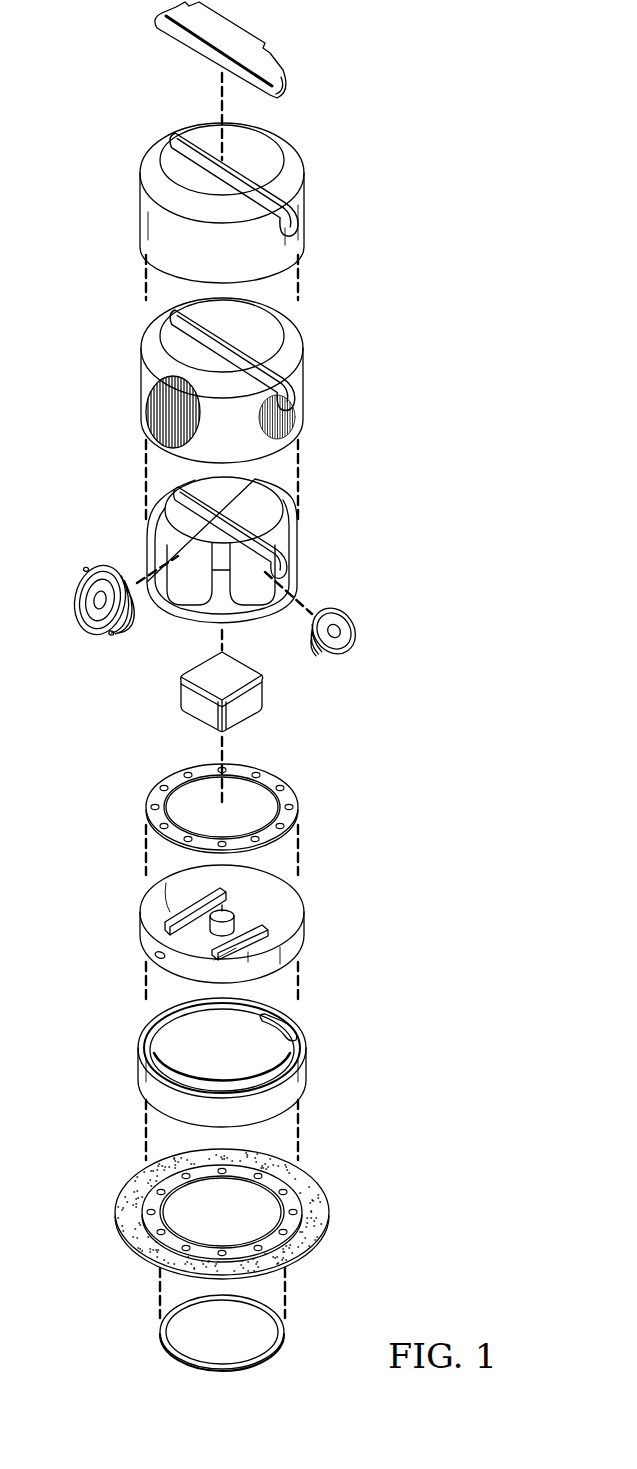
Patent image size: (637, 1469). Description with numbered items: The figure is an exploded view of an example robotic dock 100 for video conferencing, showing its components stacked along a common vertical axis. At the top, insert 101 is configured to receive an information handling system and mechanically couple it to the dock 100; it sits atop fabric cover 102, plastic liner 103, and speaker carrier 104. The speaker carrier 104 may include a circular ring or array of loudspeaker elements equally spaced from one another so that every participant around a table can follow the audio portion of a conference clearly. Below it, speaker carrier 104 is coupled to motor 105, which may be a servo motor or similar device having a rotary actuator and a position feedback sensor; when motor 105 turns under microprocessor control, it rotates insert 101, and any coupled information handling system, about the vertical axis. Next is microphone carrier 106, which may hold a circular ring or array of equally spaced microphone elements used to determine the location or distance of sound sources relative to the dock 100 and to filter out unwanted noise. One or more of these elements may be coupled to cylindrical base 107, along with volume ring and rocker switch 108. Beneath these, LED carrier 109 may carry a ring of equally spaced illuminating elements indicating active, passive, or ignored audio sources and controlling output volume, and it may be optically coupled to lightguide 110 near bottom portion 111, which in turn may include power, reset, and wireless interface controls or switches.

The robotic dock 100 is at (118, 93).
The insert 101 is at (290, 72).
The fabric cover 102 is at (306, 213).
The plastic liner 103 is at (303, 390).
The speaker carrier 104 is at (298, 553).
The motor 105 is at (262, 698).
The microphone carrier 106 is at (298, 806).
The cylindrical base 107 is at (303, 925).
The volume ring and rocker switch 108 is at (305, 1061).
The LED carrier 109 is at (142, 1210).
The lightguide 110 is at (313, 1250).
The bottom portion 111 is at (285, 1332).